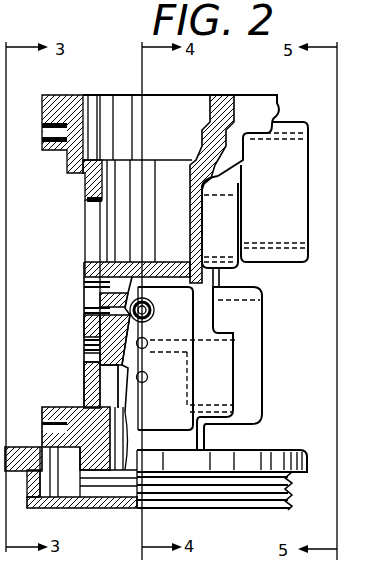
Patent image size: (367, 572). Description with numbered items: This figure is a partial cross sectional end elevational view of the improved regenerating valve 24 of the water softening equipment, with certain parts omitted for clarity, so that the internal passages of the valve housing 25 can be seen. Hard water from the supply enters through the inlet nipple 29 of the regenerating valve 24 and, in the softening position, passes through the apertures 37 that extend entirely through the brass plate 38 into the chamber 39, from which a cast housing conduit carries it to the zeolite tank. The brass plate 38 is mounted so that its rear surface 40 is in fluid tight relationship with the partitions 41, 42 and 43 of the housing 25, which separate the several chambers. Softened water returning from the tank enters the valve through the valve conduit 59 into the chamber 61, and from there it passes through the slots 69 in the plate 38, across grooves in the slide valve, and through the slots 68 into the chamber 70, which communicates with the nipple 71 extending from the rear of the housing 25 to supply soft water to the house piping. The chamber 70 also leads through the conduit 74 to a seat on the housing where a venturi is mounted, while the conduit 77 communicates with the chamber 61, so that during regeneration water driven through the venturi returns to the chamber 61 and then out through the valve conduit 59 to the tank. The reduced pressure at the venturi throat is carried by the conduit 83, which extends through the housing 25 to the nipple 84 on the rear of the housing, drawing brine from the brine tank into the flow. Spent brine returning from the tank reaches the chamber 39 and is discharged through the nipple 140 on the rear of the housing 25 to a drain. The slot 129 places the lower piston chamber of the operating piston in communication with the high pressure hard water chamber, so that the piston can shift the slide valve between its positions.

The regenerating valve 24 is at (238, 350).
The valve housing 25 is at (279, 105).
The inlet nipple 29 is at (300, 263).
The apertures 37 is at (100, 291).
The brass plate 38 is at (88, 380).
The chamber 39 is at (100, 287).
The rear surface 40 is at (92, 356).
The partition 41 is at (93, 310).
The partition 42 is at (84, 262).
The partition 43 is at (93, 331).
The valve conduit 59 is at (128, 443).
The chamber 61 is at (111, 386).
The slots 68 is at (90, 322).
The slots 69 is at (88, 352).
The chamber 70 is at (152, 306).
The nipple 71 is at (264, 396).
The conduit 74 is at (153, 315).
The conduit 77 is at (187, 358).
The conduit 83 is at (146, 349).
The nipple 84 is at (232, 343).
The slot 129 is at (95, 225).
The nipple 140 is at (236, 205).